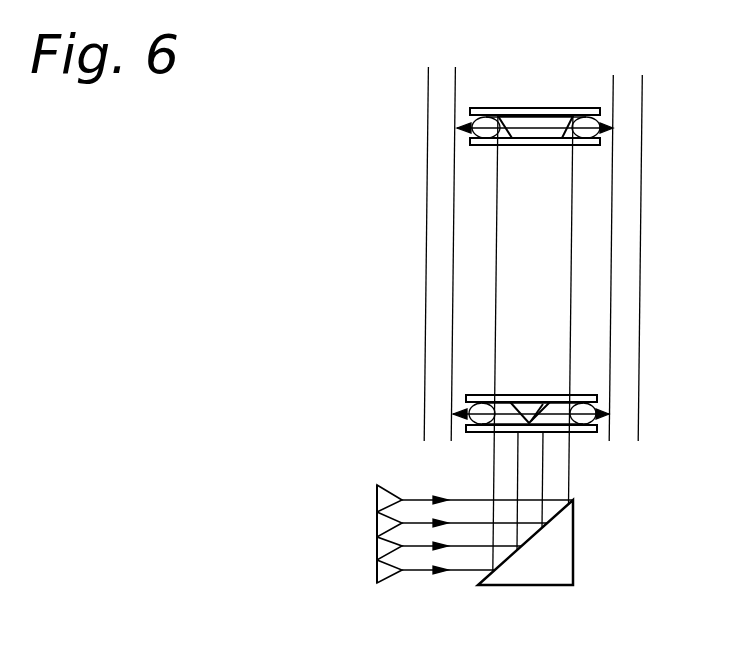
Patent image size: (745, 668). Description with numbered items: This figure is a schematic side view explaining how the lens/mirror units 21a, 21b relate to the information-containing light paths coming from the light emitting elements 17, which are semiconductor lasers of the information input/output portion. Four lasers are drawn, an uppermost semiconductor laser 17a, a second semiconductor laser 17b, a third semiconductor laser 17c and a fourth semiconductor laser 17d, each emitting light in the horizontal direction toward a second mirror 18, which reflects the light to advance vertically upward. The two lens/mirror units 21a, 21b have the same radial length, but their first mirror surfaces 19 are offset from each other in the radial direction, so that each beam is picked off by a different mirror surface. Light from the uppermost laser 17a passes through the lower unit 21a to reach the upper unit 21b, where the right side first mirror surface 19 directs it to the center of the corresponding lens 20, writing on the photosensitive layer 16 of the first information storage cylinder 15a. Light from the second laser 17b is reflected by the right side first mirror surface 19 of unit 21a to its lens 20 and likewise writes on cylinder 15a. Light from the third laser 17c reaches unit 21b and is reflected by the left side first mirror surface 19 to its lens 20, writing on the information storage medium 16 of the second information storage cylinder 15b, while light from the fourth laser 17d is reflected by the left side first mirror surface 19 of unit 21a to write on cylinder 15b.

The first information storage cylinder 15a is at (632, 187).
The second information storage cylinder 15b is at (434, 167).
The information storage medium 16 is at (455, 212).
The light emitting elements 17 is at (423, 536).
The uppermost semiconductor laser 17a is at (377, 498).
The second semiconductor laser 17b is at (377, 525).
The third semiconductor laser 17c is at (377, 547).
The fourth semiconductor laser 17d is at (377, 573).
The second mirror 18 is at (557, 555).
The first mirror surface 19 is at (508, 108).
The lens 20 is at (602, 118).
The lens/mirror unit 21a is at (515, 395).
The lens/mirror unit 21b is at (532, 147).